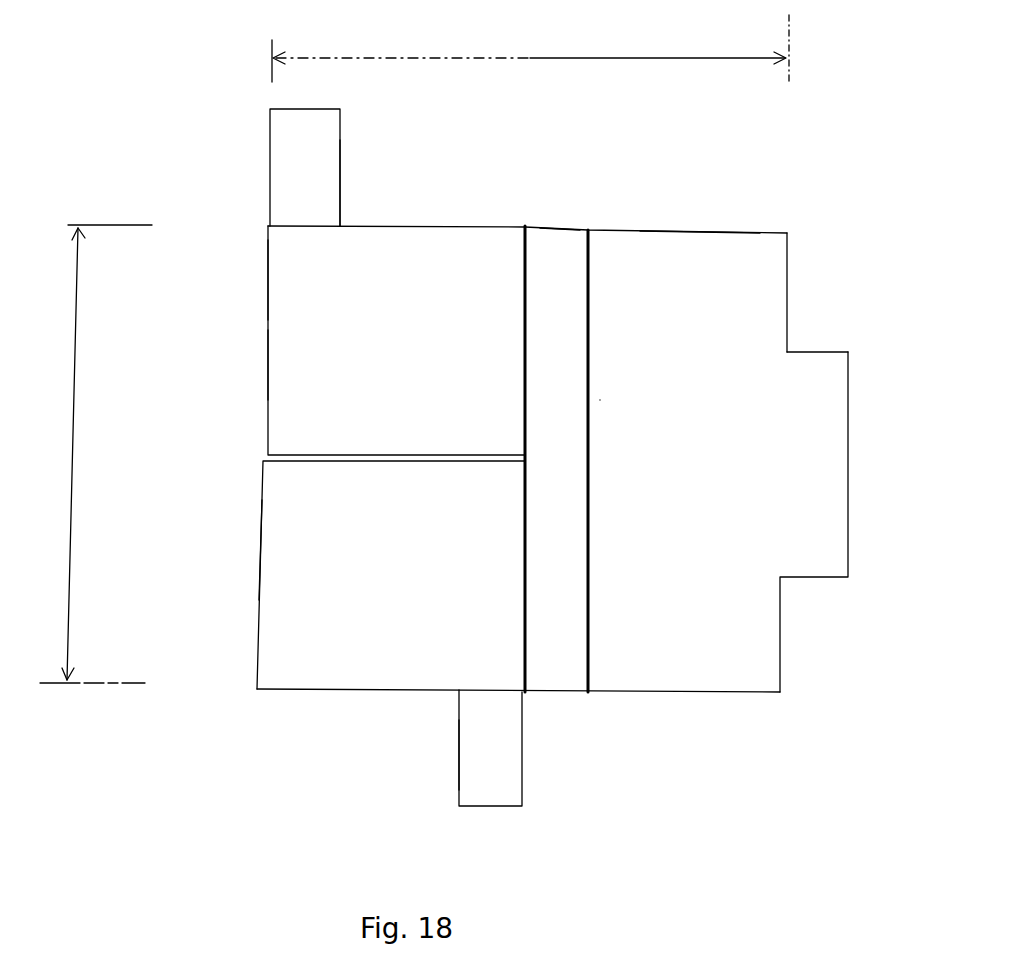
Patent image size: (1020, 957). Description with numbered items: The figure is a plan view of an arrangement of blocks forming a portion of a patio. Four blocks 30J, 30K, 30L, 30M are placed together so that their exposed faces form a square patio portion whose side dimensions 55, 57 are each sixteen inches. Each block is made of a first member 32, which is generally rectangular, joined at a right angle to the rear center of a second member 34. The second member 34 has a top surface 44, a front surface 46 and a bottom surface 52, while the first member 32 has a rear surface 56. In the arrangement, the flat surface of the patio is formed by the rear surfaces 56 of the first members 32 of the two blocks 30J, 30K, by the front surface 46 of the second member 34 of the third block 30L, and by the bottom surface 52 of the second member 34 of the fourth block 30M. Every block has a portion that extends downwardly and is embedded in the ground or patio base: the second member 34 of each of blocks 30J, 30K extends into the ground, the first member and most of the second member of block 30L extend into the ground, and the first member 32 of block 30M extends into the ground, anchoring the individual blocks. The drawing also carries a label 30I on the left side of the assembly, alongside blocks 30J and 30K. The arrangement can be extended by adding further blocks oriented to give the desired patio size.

The insert body portion 30I is at (240, 362).
The block 30J is at (235, 542).
The block 30K is at (232, 274).
The block 30L is at (590, 197).
The block 30M is at (718, 177).
The first member 32 is at (407, 222).
The second member 34 is at (342, 135).
The top surface 44 is at (342, 180).
The front surface 46 is at (563, 516).
The bottom surface 52 is at (666, 484).
The dimension 55 is at (75, 437).
The rear surface 56 is at (392, 356).
The dimension 57 is at (530, 58).